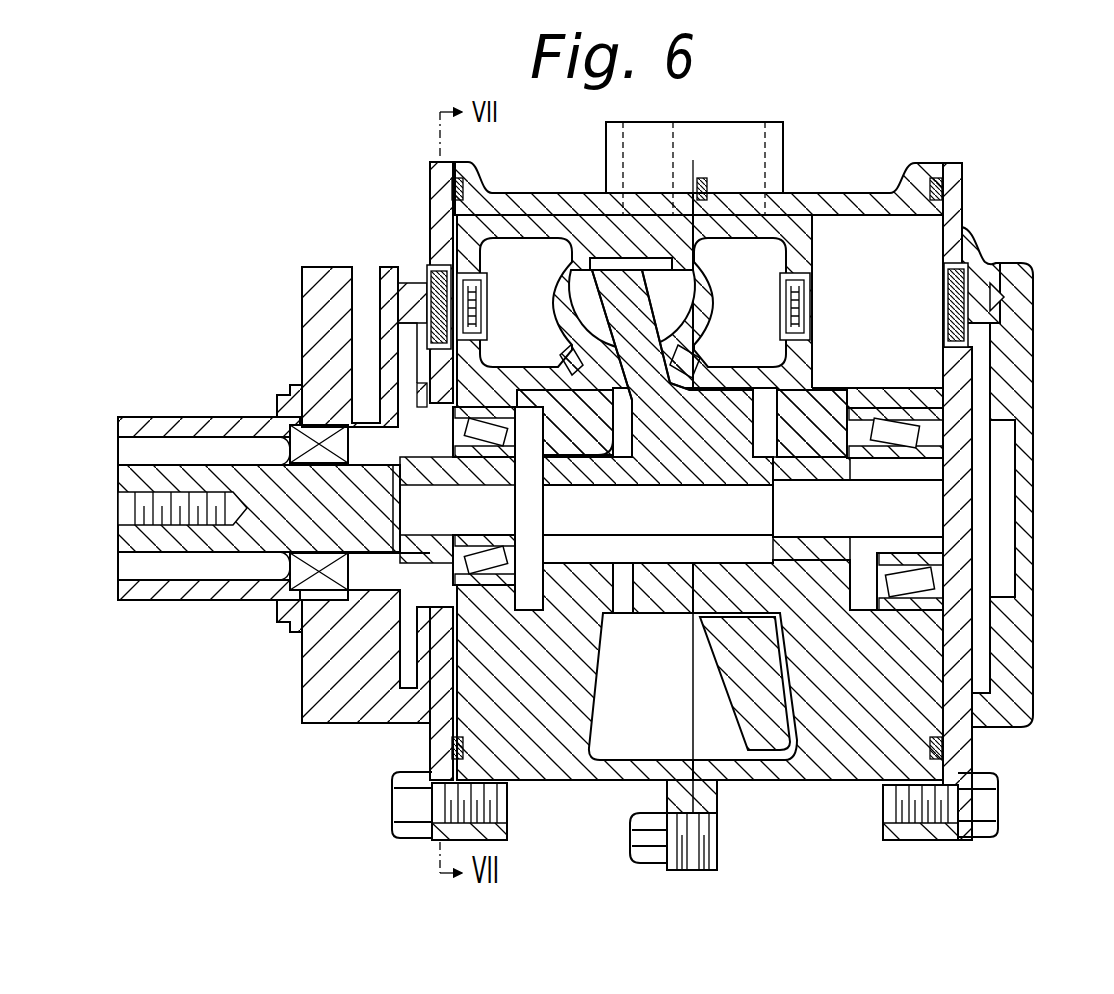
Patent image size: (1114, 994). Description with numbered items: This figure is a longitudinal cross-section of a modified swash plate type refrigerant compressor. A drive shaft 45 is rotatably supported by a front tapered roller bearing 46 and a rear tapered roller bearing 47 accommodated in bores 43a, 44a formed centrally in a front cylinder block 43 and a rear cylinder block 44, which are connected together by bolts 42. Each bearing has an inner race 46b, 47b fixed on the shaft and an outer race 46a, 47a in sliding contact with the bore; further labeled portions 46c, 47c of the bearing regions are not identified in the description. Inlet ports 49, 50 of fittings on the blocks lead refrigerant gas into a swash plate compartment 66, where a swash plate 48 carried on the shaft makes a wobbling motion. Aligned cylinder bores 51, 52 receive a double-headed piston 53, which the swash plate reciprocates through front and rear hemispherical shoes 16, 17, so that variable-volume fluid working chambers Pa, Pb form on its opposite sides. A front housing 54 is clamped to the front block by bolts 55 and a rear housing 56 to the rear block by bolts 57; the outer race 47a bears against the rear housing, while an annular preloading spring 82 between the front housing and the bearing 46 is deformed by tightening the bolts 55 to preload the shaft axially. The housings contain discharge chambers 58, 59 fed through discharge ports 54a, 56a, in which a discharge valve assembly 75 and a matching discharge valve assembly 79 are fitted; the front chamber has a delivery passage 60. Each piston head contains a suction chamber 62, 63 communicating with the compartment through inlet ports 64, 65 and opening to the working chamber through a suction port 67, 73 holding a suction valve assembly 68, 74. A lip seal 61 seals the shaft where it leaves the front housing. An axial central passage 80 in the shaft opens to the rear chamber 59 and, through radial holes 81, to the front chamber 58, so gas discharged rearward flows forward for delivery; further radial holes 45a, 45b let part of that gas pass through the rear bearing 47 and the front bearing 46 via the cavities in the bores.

The front hemispherical shoe 16 is at (590, 282).
The rear hemispherical shoe 17 is at (660, 282).
The bolts 42 is at (630, 836).
The front cylinder block 43 is at (517, 194).
The bore 43a is at (545, 412).
The rear cylinder block 44 is at (835, 194).
The bore 44a is at (860, 430).
The drive shaft 45 is at (125, 476).
The holes 45a is at (855, 470).
The holes 45b is at (530, 545).
The front tapered roller bearing 46 is at (494, 522).
The outer race 46a is at (452, 432).
The inner race 46b is at (465, 445).
The inner race 46c is at (420, 490).
The rear tapered roller bearing 47 is at (869, 534).
The outer race 47a is at (945, 430).
The inner race 47b is at (915, 465).
The retaining portion 47c is at (950, 478).
The swash plate 48 is at (748, 742).
The inlet port 49 is at (627, 137).
The inlet port 50 is at (718, 140).
The cylinder bore 51 is at (566, 214).
The cylinder bore 52 is at (886, 214).
The double-headed piston 53 is at (800, 240).
The front housing 54 is at (300, 290).
The discharge port 54a is at (405, 283).
The bolts 55 is at (392, 805).
The rear housing 56 is at (1033, 298).
The discharge port 56a is at (975, 292).
The bolts 57 is at (998, 808).
The front discharge chamber 58 is at (407, 584).
The rear discharge chamber 59 is at (991, 574).
The delivery passage 60 is at (367, 282).
The lip seal 61 is at (310, 428).
The suction chamber 62 is at (534, 309).
The suction chamber 63 is at (754, 296).
The inlet port 64 is at (566, 372).
The inlet port 65 is at (645, 392).
The swash plate compartment 66 is at (657, 716).
The suction port 67 is at (488, 318).
The suction valve assembly 68 is at (534, 276).
The suction port 73 is at (775, 318).
The suction valve assembly 74 is at (805, 358).
The discharge valve assembly 75 is at (436, 298).
The discharge valve assembly 79 is at (940, 256).
The axial central passage 80 is at (700, 521).
The holes 81 is at (395, 478).
The annular preloading spring 82 is at (356, 382).
The fluid working chamber Pa is at (433, 262).
The fluid working chamber Pb is at (864, 306).